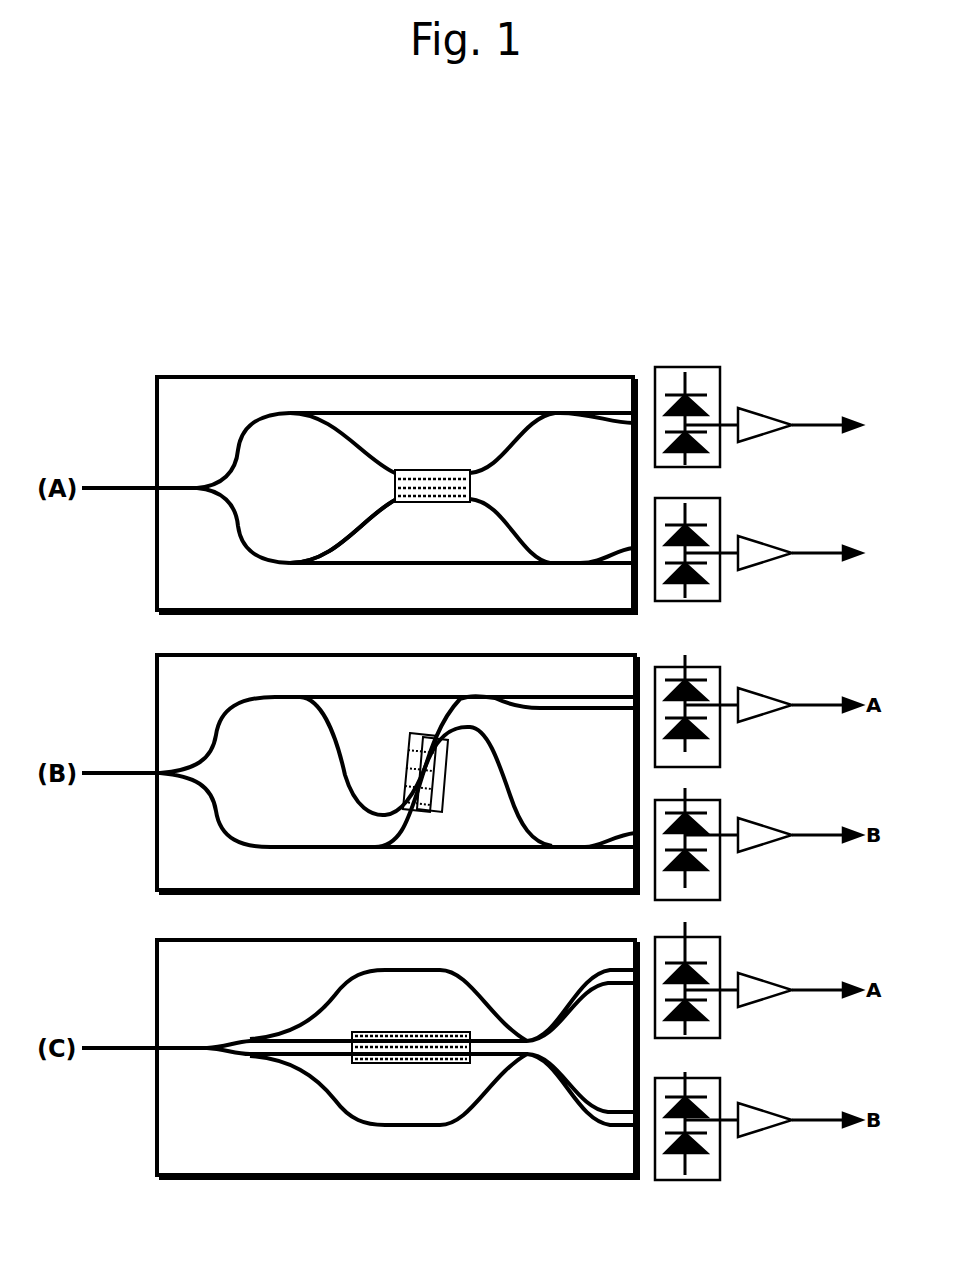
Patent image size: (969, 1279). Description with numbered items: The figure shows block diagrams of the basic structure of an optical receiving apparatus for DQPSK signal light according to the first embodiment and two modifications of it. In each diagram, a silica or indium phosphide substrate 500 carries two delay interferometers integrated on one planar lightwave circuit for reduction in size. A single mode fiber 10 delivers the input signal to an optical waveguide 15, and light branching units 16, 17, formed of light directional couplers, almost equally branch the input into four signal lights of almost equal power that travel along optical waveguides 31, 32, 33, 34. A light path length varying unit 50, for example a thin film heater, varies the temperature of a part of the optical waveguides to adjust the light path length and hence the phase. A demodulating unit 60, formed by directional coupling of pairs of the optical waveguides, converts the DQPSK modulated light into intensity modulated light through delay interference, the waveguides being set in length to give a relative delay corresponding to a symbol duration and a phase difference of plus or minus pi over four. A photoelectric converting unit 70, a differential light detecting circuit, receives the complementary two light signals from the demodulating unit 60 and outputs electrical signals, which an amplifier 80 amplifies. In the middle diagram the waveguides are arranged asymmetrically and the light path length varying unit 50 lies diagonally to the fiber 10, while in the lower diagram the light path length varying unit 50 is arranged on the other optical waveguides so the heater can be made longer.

The single mode fiber 10 is at (133, 487).
The optical waveguide 15 is at (172, 487).
The light branching unit 16 is at (213, 472).
The light branching unit 17 is at (303, 558).
The optical waveguide 31 is at (363, 558).
The optical waveguide 32 is at (340, 413).
The optical waveguide 33 is at (375, 495).
The optical waveguide 34 is at (391, 465).
The light path length varying unit 50 is at (470, 470).
The substrate 500 is at (520, 378).
The demodulating unit 60 is at (560, 413).
The photoelectric converting unit 70 is at (712, 367).
The amplifier 80 is at (767, 418).